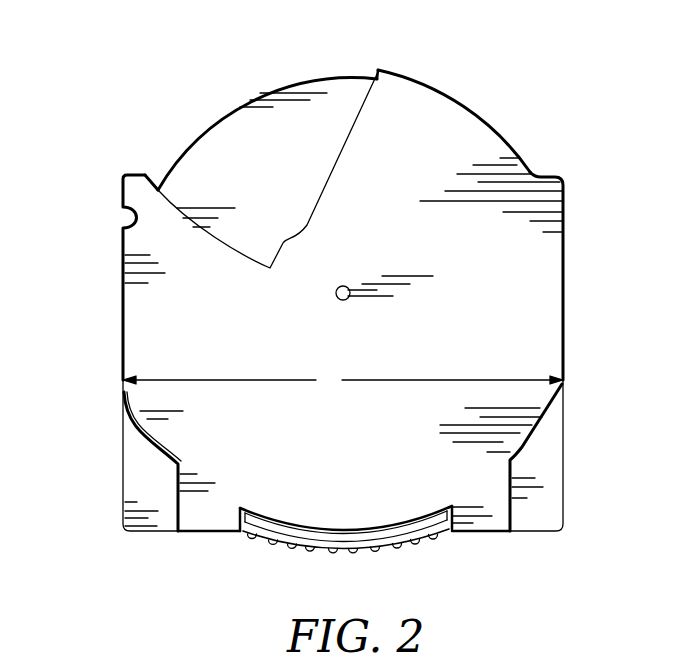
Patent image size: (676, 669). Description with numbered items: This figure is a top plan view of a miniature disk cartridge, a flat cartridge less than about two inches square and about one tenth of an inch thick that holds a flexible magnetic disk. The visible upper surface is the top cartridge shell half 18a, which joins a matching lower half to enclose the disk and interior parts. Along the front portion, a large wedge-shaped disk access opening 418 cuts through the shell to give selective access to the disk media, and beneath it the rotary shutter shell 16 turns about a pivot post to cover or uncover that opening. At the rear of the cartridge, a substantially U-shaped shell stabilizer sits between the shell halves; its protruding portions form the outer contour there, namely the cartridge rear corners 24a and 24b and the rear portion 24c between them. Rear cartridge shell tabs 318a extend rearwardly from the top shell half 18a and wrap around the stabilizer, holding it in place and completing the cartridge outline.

The rotary shutter shell 16 is at (207, 127).
The disk access opening 418 is at (331, 58).
The top cartridge shell half 18a is at (522, 297).
The cartridge rear corner 24a is at (143, 482).
The cartridge rear corner 24b is at (550, 487).
The rear portion 24c is at (323, 552).
The rear cartridge shell tab 318a is at (222, 513).